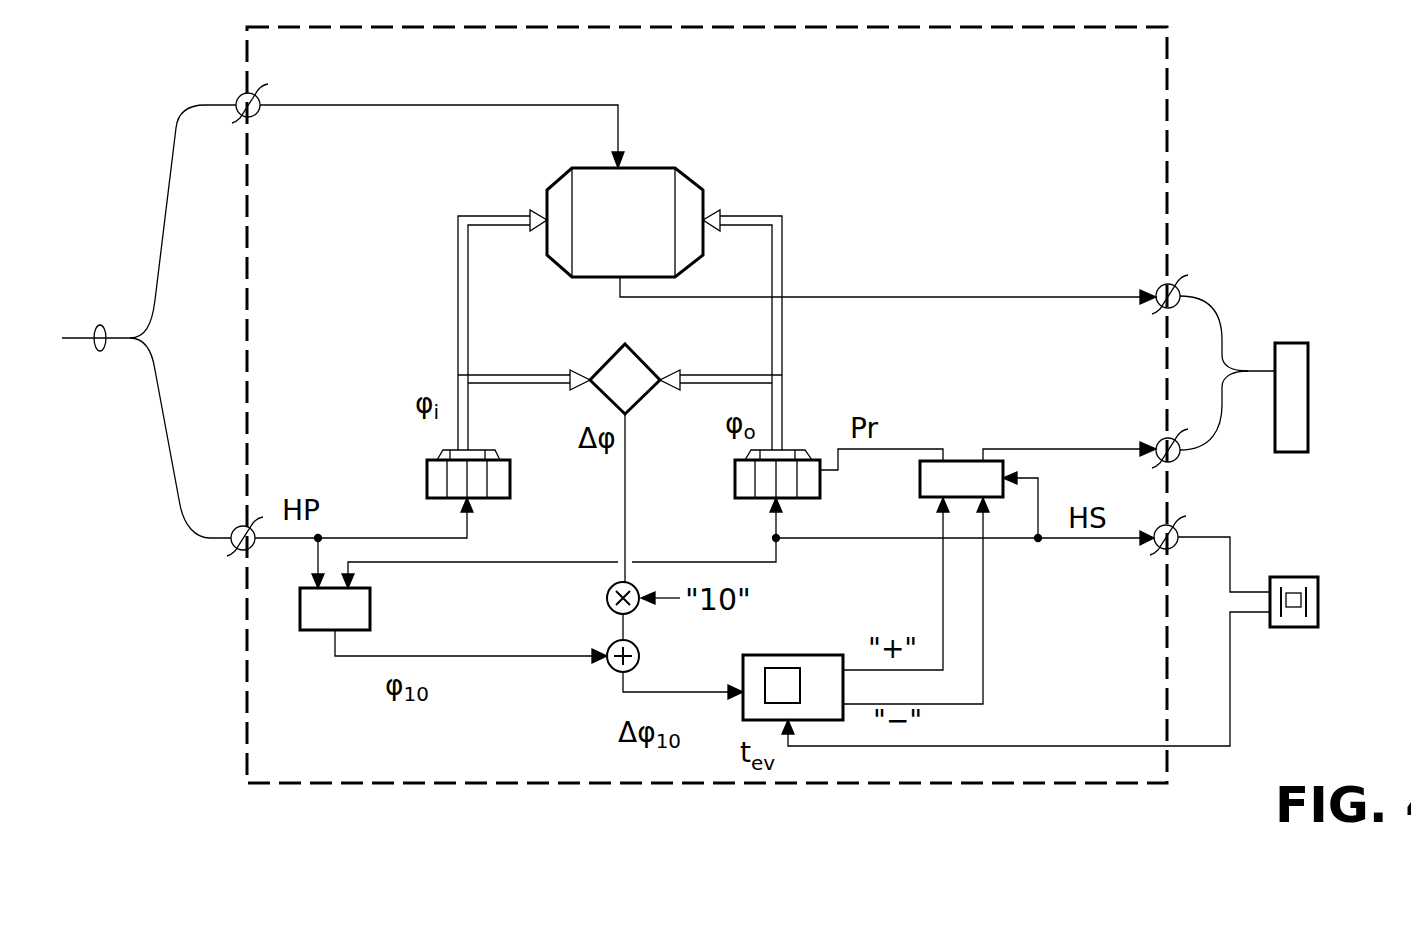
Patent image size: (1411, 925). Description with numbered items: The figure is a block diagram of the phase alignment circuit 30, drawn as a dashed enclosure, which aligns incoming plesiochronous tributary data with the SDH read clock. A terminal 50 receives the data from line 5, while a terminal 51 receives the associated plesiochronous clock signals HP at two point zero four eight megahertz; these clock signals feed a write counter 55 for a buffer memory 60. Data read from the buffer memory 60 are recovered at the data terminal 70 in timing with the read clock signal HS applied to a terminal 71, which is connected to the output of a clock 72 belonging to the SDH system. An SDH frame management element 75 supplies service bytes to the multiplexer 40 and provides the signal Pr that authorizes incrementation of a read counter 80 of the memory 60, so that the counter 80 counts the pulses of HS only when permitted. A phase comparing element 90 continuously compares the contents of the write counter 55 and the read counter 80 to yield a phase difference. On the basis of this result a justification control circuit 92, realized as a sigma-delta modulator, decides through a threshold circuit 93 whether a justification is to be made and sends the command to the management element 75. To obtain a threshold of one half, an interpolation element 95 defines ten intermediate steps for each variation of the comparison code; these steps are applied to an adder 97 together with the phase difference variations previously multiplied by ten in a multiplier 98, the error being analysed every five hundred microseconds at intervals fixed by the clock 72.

The line 5 is at (98, 352).
The phase alignment circuit 30 is at (400, 785).
The multiplexer 40 is at (1308, 402).
The terminal 50 is at (238, 92).
The terminal 51 is at (236, 526).
The write counter 55 is at (512, 480).
The buffer memory 60 is at (656, 170).
The data terminal 70 is at (1158, 285).
The terminal 71 is at (1177, 546).
The clock 72 is at (1318, 600).
The SDH frame management element 75 is at (955, 461).
The read counter 80 is at (735, 470).
The phase comparing element 90 is at (644, 375).
The justification control circuit 92 is at (793, 659).
The threshold circuit 93 is at (770, 668).
The interpolation element 95 is at (372, 605).
The adder 97 is at (640, 656).
The multiplier 98 is at (607, 592).